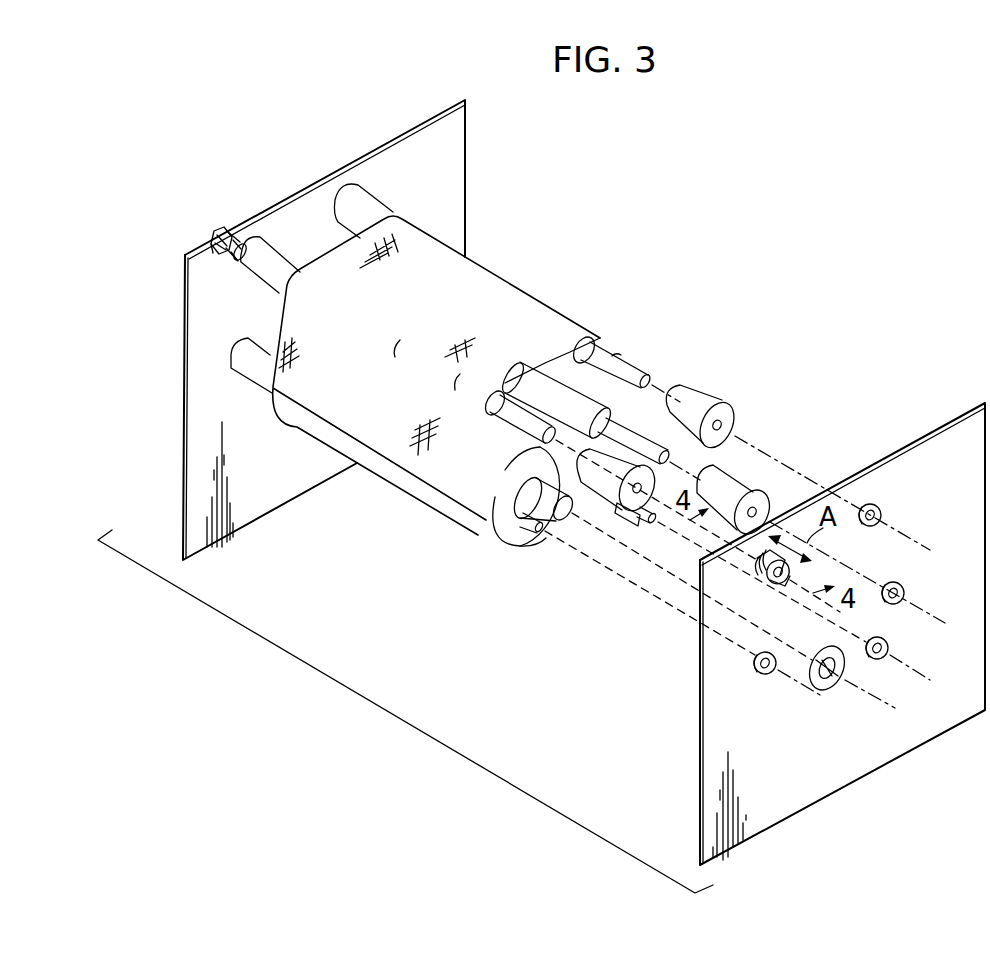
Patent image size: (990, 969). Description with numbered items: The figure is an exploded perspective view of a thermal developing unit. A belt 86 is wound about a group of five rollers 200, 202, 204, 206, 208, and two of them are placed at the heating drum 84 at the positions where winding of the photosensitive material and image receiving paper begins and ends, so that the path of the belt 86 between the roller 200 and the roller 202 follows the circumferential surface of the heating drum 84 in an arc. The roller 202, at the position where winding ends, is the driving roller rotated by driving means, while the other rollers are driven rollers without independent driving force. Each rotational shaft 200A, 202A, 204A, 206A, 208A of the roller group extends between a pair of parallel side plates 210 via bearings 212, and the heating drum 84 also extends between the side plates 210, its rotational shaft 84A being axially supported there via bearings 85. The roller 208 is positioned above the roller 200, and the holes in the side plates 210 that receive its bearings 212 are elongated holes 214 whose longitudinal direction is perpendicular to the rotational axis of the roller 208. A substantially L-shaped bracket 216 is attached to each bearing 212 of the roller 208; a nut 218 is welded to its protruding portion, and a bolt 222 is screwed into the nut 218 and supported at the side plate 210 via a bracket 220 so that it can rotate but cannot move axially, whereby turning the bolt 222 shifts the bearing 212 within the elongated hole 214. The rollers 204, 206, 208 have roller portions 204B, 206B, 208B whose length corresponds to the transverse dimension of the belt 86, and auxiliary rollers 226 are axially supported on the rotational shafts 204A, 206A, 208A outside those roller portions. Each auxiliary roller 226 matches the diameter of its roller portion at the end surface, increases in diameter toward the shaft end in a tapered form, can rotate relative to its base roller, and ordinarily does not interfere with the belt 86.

The heating drum 84 is at (518, 565).
The rotational shaft of the heating drum 84A is at (560, 520).
The bearing 85 is at (824, 690).
The belt 86 is at (497, 290).
The roller 200 is at (490, 512).
The rotational shaft 200A is at (537, 527).
The roller 202 is at (610, 490).
The rotational shaft 202A is at (633, 512).
The roller 204 is at (640, 400).
The rotational shaft 204A is at (655, 410).
The roller portion 204B is at (620, 392).
The roller 206 is at (605, 332).
The rotational shaft 206A is at (617, 357).
The roller portion 206B is at (578, 330).
The roller 208 is at (507, 377).
The rotational shaft 208A is at (470, 490).
The roller portion 208B is at (490, 400).
The side plate 210 is at (478, 124).
The bearing 212 is at (882, 508).
The elongated hole 214 is at (778, 585).
The bracket 216 is at (230, 263).
The nut 218 is at (233, 235).
The bracket 220 is at (213, 253).
The bolt 222 is at (214, 238).
The auxiliary roller 226 is at (275, 260).